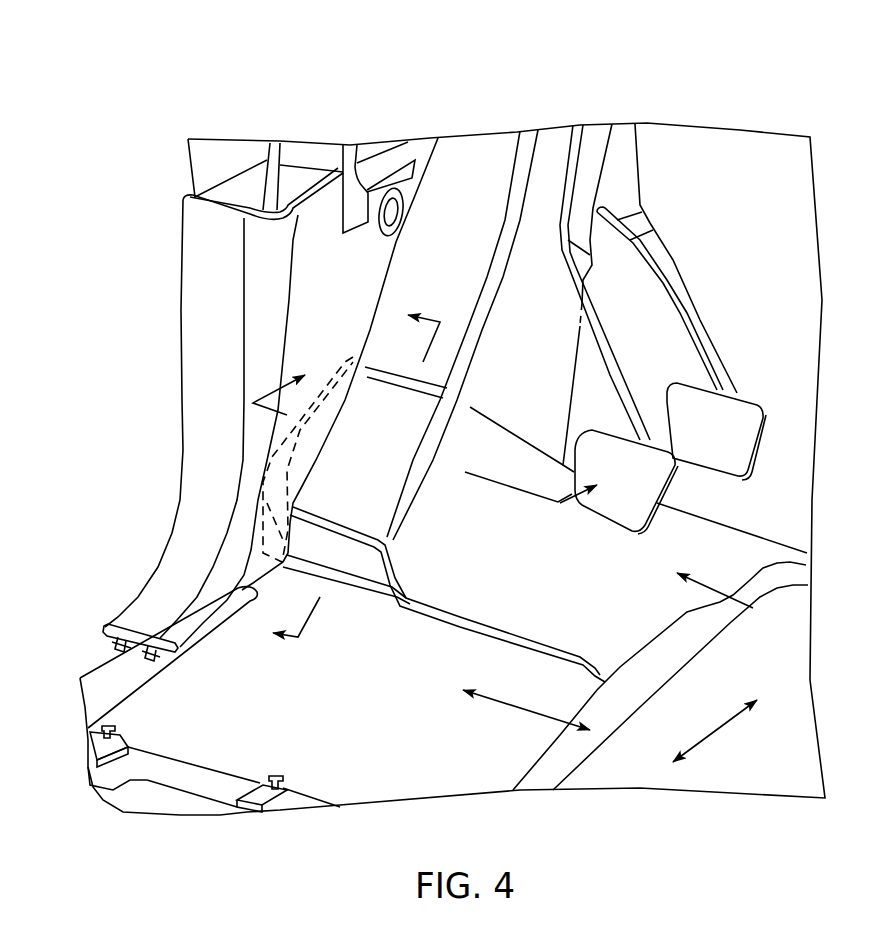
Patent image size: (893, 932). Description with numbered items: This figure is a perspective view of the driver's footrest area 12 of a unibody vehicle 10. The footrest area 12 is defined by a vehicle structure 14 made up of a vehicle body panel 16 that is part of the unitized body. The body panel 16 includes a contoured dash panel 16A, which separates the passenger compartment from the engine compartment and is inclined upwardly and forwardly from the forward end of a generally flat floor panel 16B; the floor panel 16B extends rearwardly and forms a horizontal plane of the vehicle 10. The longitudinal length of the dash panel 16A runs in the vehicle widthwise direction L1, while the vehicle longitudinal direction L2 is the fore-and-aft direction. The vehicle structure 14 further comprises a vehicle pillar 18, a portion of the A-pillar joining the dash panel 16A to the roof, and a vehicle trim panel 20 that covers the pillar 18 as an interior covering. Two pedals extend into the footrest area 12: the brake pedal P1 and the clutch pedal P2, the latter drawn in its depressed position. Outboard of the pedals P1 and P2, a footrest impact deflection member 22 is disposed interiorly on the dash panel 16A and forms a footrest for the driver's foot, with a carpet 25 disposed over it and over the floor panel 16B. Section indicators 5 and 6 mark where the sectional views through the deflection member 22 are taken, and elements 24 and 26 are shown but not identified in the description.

The vehicle 10 is at (665, 58).
The vehicle footrest area 12 is at (735, 595).
The vehicle structure 14 is at (530, 305).
The vehicle body panel 16 is at (763, 493).
The dash panel 16A is at (748, 548).
The floor panel 16B is at (350, 680).
The vehicle pillar 18 is at (228, 170).
The vehicle trim panel 20 is at (277, 250).
The vehicle footrest impact deflection member 22 is at (388, 363).
The hidden bracket 24 is at (287, 472).
The carpet 25 is at (633, 608).
The pillar garnish 26 is at (407, 420).
The brake pedal P1 is at (658, 484).
The clutch pedal P2 is at (731, 442).
The vehicle widthwise direction L1 is at (520, 713).
The vehicle longitudinal direction L2 is at (717, 733).
The section line 5- 5 is at (435, 430).
The section line 6- 6 is at (346, 472).